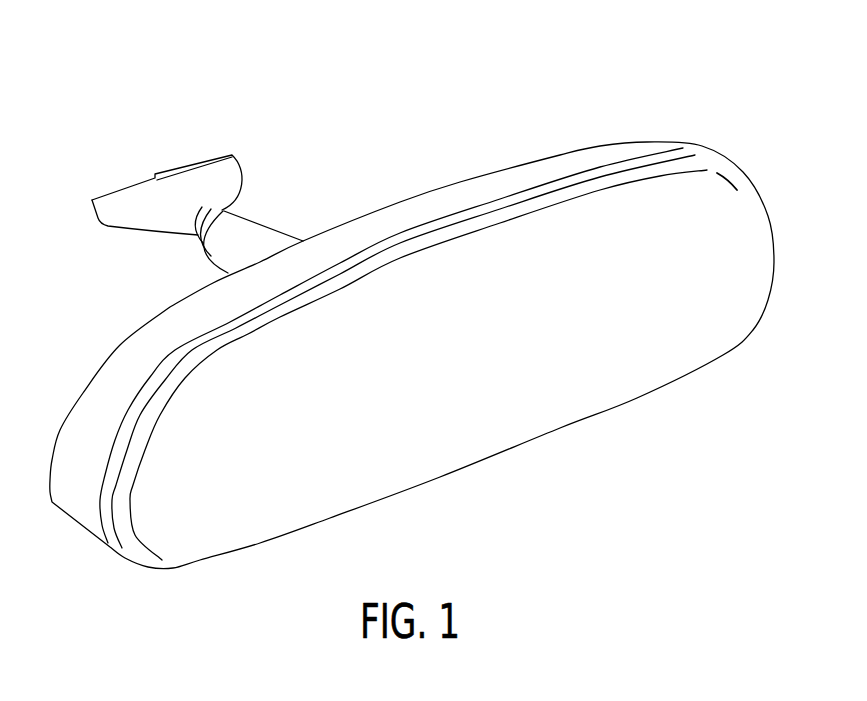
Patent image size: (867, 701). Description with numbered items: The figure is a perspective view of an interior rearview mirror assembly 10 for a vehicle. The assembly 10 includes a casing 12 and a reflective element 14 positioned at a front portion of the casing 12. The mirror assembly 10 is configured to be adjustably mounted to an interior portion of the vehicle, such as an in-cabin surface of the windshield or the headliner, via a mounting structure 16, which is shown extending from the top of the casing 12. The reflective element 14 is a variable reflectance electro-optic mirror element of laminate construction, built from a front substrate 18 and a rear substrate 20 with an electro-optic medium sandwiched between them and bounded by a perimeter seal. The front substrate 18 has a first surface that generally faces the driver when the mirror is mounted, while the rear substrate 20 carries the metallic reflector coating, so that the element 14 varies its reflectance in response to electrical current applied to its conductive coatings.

The interior rearview mirror assembly 10 is at (583, 75).
The casing 12 is at (438, 203).
The reflective element 14 is at (345, 435).
The mounting structure 16 is at (266, 159).
The front substrate 18 is at (633, 388).
The rear substrate 20 is at (150, 390).